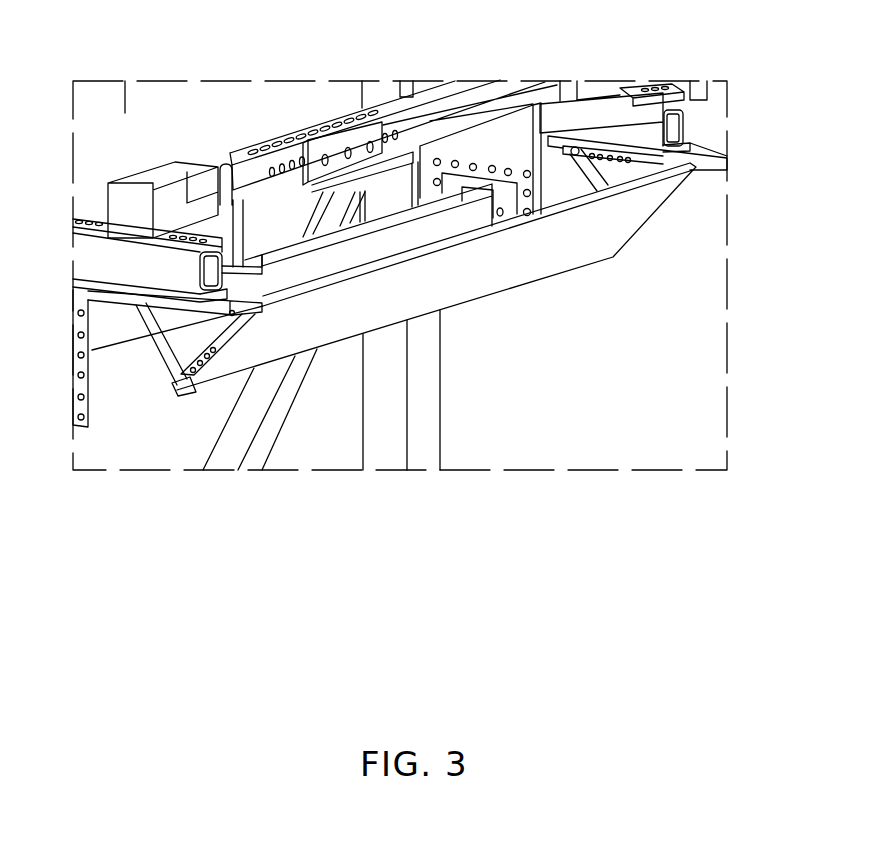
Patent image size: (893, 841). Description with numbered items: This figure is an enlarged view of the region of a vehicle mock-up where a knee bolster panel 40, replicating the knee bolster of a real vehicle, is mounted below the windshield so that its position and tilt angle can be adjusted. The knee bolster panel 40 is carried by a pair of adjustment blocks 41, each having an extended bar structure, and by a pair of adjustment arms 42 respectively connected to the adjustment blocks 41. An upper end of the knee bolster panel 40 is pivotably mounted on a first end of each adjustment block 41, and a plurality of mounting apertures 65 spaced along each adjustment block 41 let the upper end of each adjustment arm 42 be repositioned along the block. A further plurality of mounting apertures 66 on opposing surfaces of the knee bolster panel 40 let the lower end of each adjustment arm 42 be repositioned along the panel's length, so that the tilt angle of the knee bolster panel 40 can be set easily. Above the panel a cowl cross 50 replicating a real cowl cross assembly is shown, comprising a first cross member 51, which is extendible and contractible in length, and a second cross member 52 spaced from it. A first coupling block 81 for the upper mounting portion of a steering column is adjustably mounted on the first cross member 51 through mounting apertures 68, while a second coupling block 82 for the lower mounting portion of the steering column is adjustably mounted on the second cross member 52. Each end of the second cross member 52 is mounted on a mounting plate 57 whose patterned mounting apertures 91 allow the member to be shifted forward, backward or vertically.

The knee bolster panel 40 is at (552, 262).
The adjustment block 41 is at (175, 307).
The adjustment arm 42 is at (173, 358).
The cowl cross 50 is at (236, 118).
The first cross member 51 is at (397, 103).
The second cross member 52 is at (436, 228).
The mounting plate 57 is at (521, 130).
The mounting apertures 65 is at (630, 158).
The mounting apertures 66 is at (197, 372).
The mounting apertures 68 is at (399, 132).
The first coupling block 81 is at (362, 140).
The second coupling block 82 is at (232, 222).
The mounting apertures 91 is at (507, 170).